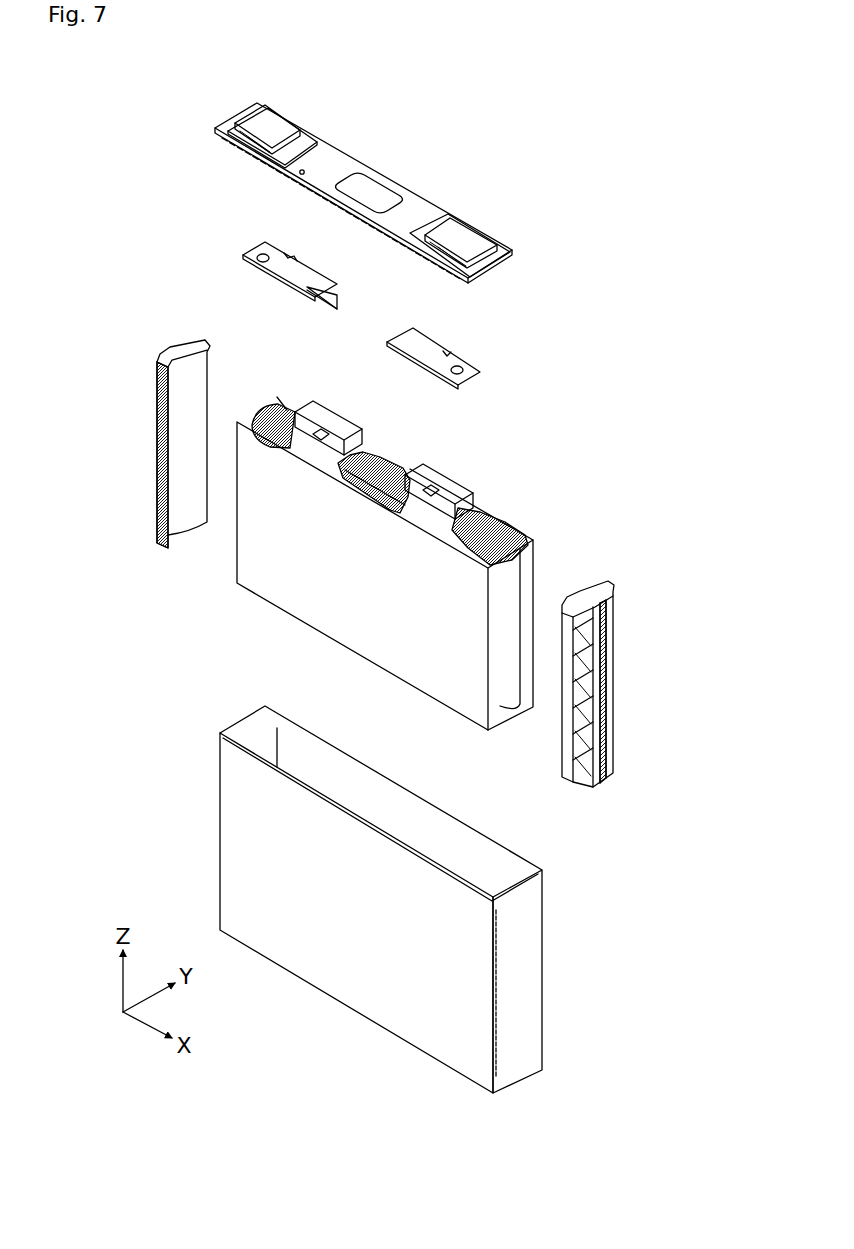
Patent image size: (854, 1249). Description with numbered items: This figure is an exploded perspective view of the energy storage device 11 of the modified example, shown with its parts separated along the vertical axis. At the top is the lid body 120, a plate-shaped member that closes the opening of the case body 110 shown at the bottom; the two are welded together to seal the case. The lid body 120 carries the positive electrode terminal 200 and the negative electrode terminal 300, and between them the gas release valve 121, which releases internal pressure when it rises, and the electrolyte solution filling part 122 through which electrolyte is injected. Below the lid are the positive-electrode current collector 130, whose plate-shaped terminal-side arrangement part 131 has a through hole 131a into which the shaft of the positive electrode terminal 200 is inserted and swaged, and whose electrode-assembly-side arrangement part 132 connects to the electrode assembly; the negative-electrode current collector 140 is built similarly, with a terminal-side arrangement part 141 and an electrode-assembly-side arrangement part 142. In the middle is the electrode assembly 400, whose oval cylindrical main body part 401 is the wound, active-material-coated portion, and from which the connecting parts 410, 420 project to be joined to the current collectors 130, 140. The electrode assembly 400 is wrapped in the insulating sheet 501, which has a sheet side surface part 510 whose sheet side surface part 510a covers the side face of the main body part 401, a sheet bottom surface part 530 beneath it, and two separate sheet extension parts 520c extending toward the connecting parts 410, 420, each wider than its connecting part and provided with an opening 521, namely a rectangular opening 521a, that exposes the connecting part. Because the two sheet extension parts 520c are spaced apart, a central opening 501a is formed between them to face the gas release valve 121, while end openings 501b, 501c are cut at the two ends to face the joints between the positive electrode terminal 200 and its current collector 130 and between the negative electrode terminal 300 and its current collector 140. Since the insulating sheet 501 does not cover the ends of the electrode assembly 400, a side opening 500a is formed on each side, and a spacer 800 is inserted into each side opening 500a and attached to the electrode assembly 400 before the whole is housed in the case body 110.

The energy storage device 11 is at (511, 131).
The case body 110 is at (220, 823).
The lid body 120 is at (507, 243).
The gas release valve 121 is at (370, 187).
The electrolyte solution filling part 122 is at (303, 170).
The positive-electrode current collector 130 is at (297, 246).
The terminal-side arrangement part 131 is at (307, 273).
The through hole 131a is at (256, 262).
The electrode-assembly-side arrangement part 132 is at (338, 296).
The negative-electrode current collector 140 is at (464, 337).
The terminal-side arrangement part 141 is at (425, 338).
The electrode-assembly-side arrangement part 142 is at (452, 357).
The positive electrode terminal 200 is at (275, 123).
The negative electrode terminal 300 is at (465, 232).
The electrode assembly 400 is at (412, 560).
The main body part 401 is at (412, 560).
The connecting part 410 is at (411, 421).
The connecting part 420 is at (441, 494).
The side opening 500a is at (534, 575).
The insulating sheet 501 is at (397, 536).
The central opening 501a is at (347, 480).
The end opening 501b is at (270, 407).
The end opening 501c is at (507, 530).
The sheet side surface part 510 is at (362, 576).
The sheet side surface part 510a is at (417, 589).
The sheet extension part 520c is at (347, 433).
The opening 521 is at (436, 427).
The opening 521a is at (320, 428).
The sheet bottom surface part 530 is at (370, 665).
The spacer 800 is at (157, 408).